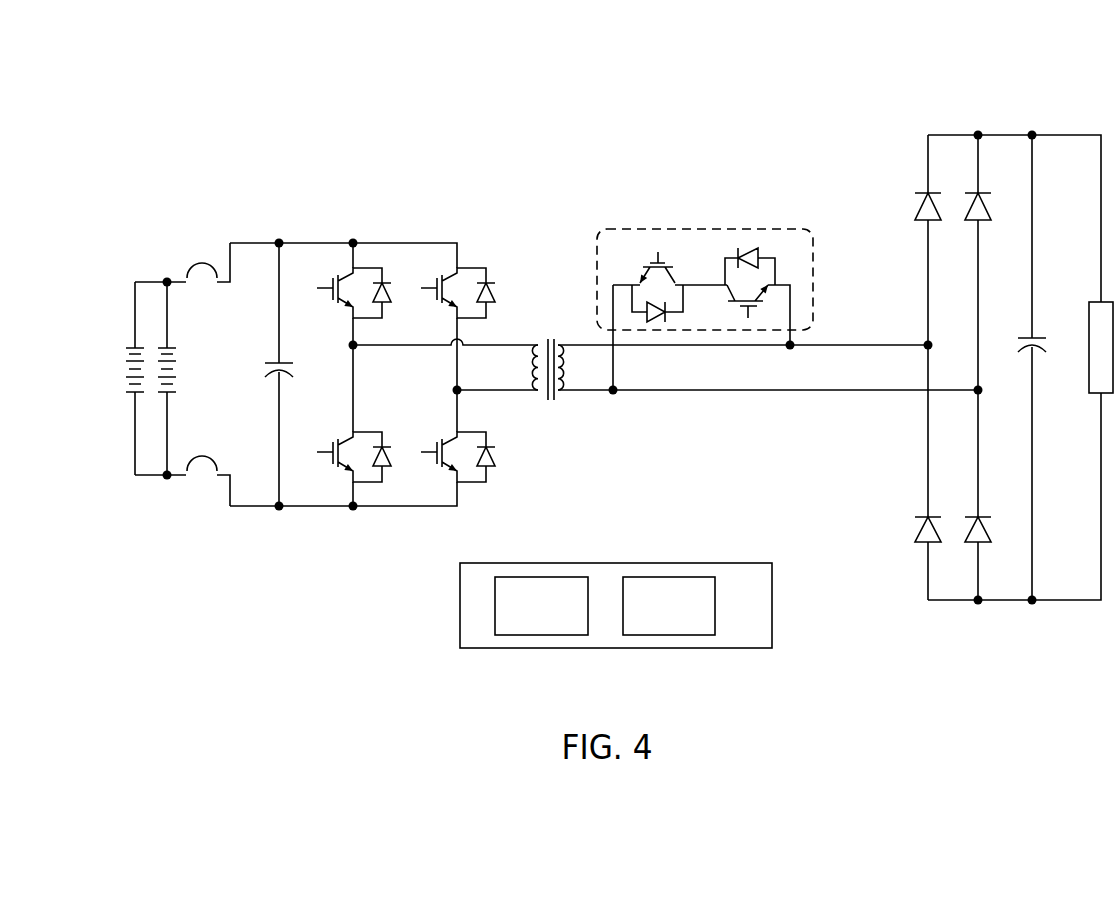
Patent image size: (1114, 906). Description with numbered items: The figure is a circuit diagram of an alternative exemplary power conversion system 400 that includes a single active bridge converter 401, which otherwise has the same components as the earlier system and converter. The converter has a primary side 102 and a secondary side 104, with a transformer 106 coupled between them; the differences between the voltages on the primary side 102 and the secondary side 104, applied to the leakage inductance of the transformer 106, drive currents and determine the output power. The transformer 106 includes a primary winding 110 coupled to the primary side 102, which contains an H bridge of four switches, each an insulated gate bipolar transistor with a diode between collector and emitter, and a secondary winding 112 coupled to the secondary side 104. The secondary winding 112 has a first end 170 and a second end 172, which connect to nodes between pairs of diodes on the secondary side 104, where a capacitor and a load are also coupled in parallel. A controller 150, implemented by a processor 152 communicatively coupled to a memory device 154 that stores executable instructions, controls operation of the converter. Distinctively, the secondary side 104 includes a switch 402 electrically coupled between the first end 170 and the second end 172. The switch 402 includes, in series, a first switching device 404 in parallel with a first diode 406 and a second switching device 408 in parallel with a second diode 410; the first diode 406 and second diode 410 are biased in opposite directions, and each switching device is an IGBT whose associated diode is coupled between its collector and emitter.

The power conversion system 400 is at (600, 108).
The primary side 102 is at (433, 243).
The secondary side 104 is at (1010, 134).
The transformer 106 is at (550, 339).
The primary winding 110 is at (537, 362).
The secondary winding 112 is at (565, 372).
The controller 150 is at (703, 563).
The processor 152 is at (541, 606).
The memory device 154 is at (669, 606).
The first end 170 is at (868, 344).
The second end 172 is at (722, 391).
The single active bridge converter 401 is at (565, 253).
The switch 402 is at (707, 229).
The first switching device 404 is at (676, 284).
The first diode 406 is at (657, 320).
The second switching device 408 is at (733, 302).
The second diode 410 is at (755, 247).